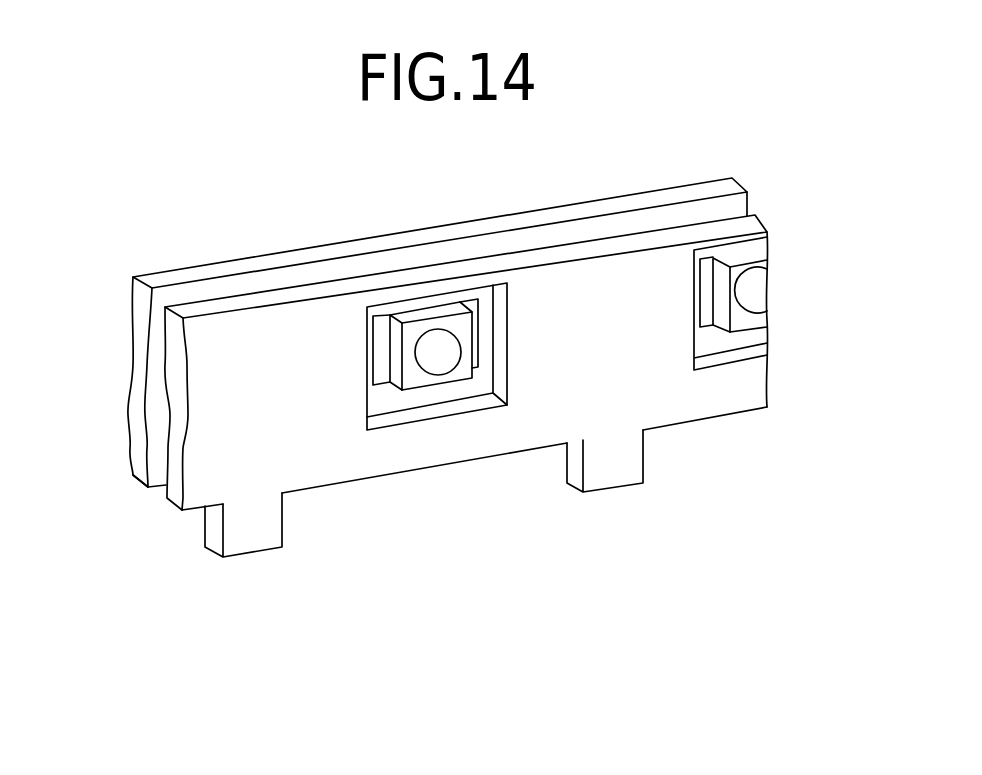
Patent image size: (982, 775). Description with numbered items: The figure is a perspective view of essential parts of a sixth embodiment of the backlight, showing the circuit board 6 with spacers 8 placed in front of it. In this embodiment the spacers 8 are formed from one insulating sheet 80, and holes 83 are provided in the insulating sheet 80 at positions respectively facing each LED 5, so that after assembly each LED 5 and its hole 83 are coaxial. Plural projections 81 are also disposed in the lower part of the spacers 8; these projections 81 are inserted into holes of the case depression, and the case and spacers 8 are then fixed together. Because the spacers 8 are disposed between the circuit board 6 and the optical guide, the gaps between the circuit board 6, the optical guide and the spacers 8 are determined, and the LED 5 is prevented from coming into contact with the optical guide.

The LED 5 is at (415, 380).
The circuit board 6 is at (263, 263).
The spacer 8 is at (370, 283).
The insulating sheet 80 is at (190, 498).
The projection 81 is at (253, 542).
The hole 83 is at (473, 410).